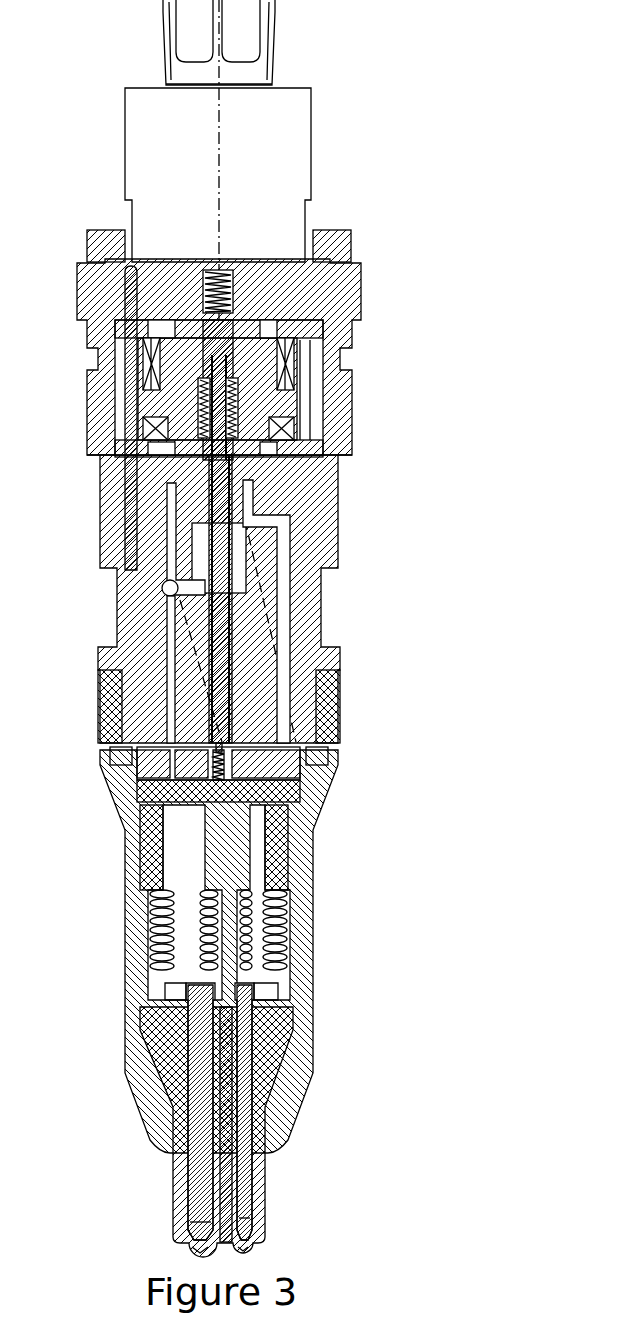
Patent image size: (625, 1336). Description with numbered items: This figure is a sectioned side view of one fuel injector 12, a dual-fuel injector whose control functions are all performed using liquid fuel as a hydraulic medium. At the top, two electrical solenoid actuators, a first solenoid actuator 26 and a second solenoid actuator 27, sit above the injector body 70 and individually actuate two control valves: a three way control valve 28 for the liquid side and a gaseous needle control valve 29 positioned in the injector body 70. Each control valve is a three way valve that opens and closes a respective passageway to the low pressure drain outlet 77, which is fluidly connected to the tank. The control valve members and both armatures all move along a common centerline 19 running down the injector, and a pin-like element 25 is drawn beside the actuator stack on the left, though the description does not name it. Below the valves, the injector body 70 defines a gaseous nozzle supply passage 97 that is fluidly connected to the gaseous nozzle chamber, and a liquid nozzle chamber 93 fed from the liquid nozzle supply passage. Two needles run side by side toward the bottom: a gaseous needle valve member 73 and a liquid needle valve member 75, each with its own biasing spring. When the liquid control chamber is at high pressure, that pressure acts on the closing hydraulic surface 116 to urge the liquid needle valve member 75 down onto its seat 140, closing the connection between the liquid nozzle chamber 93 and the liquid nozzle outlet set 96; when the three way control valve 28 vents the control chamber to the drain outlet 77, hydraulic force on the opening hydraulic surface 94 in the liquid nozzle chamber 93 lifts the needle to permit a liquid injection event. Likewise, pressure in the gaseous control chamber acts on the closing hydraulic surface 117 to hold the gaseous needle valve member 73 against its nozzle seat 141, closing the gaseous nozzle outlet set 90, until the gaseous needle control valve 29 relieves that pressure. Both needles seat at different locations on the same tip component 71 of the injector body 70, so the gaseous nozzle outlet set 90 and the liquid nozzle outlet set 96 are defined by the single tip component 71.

The fuel injector 12 is at (358, 462).
The common centerline 19 is at (218, 146).
The armature guide pin 25 is at (124, 407).
The first solenoid actuator 26 is at (290, 453).
The second solenoid actuator 27 is at (295, 336).
The three way control valve 28 is at (177, 533).
The gaseous needle control valve 29 is at (245, 762).
The injector body 70 is at (322, 608).
The tip component 71 is at (267, 1173).
The gaseous needle valve member 73 is at (190, 1030).
The liquid needle valve member 75 is at (252, 1030).
The drain outlet 77 is at (125, 752).
The gaseous nozzle outlet set 90 is at (190, 1248).
The liquid nozzle chamber 93 is at (280, 924).
The opening hydraulic surface 94 is at (278, 870).
The liquid nozzle outlet set 96 is at (250, 1248).
The gaseous nozzle supply passage 97 is at (166, 900).
The closing hydraulic surface 116 is at (268, 806).
The closing hydraulic surface 117 is at (145, 806).
The seat 140 is at (260, 1215).
The nozzle seat 141 is at (193, 1220).